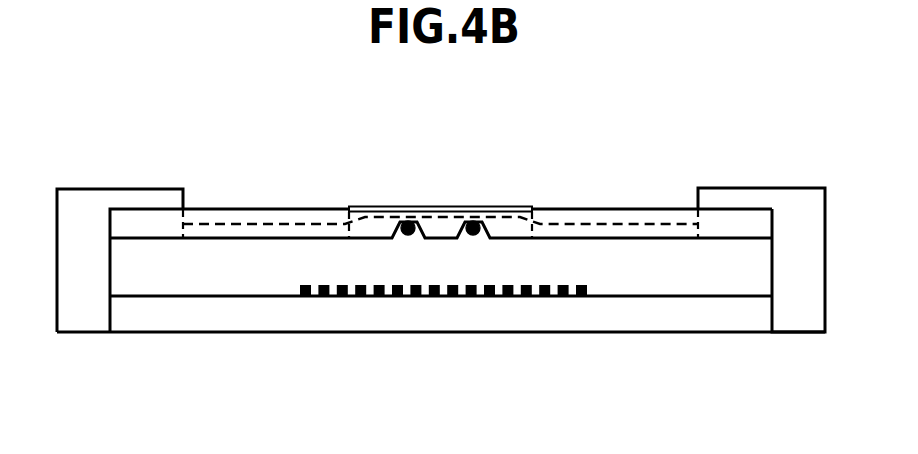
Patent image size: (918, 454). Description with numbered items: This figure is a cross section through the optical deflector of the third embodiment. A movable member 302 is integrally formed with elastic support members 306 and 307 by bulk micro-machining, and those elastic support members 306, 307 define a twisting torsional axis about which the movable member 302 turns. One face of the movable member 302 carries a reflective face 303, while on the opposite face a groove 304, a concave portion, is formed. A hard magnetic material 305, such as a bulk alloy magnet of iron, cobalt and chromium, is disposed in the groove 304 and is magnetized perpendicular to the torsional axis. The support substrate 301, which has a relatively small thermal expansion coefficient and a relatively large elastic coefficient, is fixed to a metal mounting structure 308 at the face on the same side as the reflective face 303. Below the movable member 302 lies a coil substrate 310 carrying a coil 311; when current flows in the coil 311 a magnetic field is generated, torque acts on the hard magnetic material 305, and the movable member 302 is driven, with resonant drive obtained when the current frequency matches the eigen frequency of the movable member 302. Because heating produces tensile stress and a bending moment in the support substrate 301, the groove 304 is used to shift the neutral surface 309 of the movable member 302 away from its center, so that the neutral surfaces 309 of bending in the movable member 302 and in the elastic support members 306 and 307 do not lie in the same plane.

The support substrate 301 is at (733, 225).
The movable member 302 is at (503, 228).
The reflective face 303 is at (364, 207).
The groove 304 is at (418, 233).
The hard magnetic material 305 is at (477, 232).
The elastic support member 306 is at (220, 208).
The elastic support member 307 is at (656, 208).
The mounting structure 308 is at (797, 280).
The neutral surface 309 is at (585, 224).
The coil substrate 310 is at (165, 310).
The coil 311 is at (567, 298).